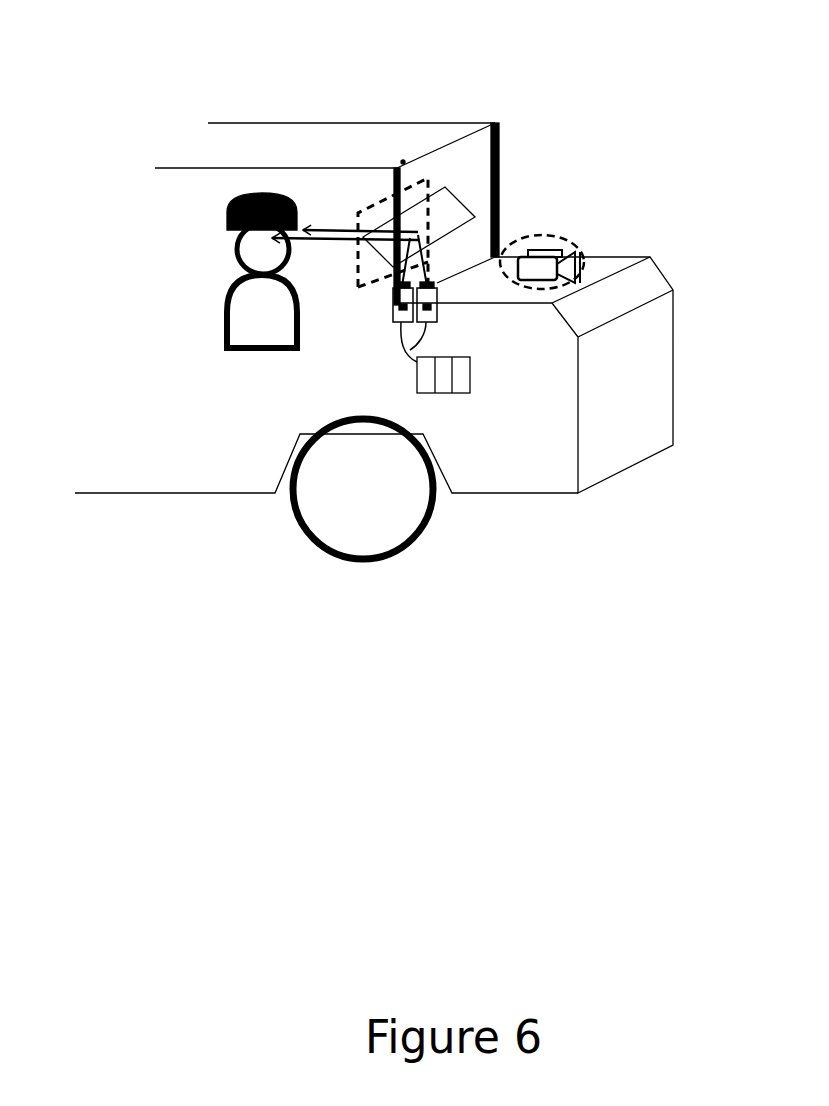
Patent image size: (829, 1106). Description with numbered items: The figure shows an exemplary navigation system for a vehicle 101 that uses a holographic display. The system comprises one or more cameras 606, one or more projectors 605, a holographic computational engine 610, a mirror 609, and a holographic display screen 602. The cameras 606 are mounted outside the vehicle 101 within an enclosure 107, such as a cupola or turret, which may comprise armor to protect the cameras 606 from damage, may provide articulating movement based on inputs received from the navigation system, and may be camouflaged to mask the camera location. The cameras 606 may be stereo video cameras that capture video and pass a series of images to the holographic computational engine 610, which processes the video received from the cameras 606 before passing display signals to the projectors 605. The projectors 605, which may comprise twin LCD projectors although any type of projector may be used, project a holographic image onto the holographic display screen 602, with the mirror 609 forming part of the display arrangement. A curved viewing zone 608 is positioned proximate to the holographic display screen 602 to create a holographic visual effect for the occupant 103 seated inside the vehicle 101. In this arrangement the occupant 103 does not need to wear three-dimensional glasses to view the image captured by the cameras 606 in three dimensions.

The vehicle 101 is at (177, 448).
The occupant 103 is at (235, 272).
The enclosure 107 is at (585, 257).
The holographic display screen 602 is at (331, 185).
The projectors 605 is at (347, 320).
The cameras 606 is at (557, 232).
The curved viewing zone 608 is at (320, 82).
The mirror 609 is at (476, 195).
The holographic computational engine 610 is at (506, 448).